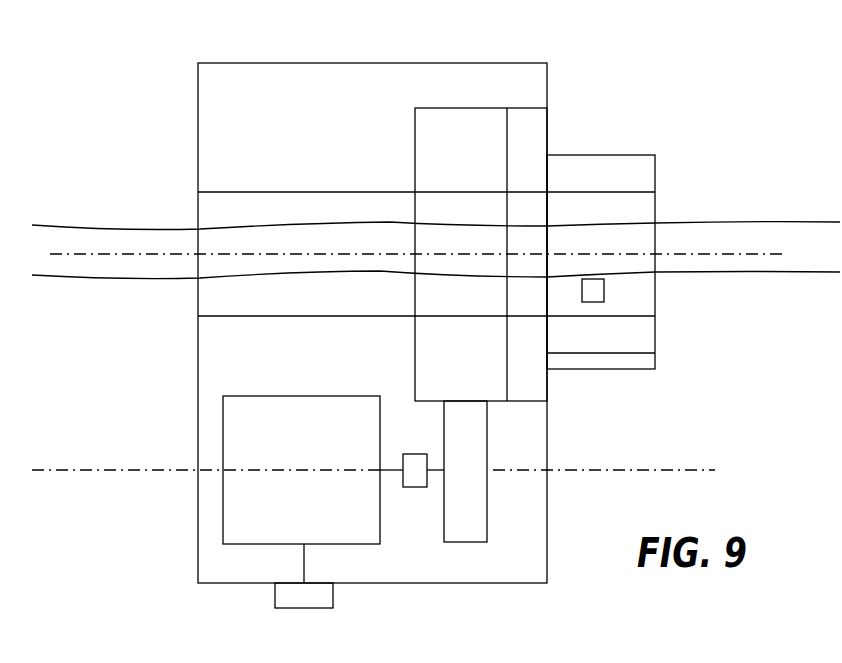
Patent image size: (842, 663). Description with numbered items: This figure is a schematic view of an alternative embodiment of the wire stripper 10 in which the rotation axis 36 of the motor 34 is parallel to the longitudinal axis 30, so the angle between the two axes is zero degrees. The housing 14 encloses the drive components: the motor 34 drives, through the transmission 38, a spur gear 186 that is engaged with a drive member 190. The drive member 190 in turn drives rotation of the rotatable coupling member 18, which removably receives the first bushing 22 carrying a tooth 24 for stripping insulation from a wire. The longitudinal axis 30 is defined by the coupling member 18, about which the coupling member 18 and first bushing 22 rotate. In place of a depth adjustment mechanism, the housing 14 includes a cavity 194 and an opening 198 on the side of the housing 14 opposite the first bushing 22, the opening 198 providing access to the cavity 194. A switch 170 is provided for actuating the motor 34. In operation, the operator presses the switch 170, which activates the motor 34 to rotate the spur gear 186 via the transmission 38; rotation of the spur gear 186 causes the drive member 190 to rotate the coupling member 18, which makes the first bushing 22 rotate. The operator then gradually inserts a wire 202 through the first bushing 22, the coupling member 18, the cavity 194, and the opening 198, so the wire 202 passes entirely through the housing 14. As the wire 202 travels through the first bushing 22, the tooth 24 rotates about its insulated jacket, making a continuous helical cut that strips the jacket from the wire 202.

The wire stripper 10 is at (142, 72).
The housing 14 is at (240, 78).
The coupling member 18 is at (527, 130).
The first bushing 22 is at (608, 170).
The tooth 24 is at (604, 290).
The longitudinal axis 30 is at (720, 252).
The motor 34 is at (246, 517).
The rotation axis 36 is at (636, 470).
The transmission 38 is at (406, 488).
The switch 170 is at (290, 604).
The spur gear 186 is at (478, 518).
The drive member 190 is at (462, 125).
The cavity 194 is at (305, 208).
The opening 198 is at (198, 298).
The wire 202 is at (120, 225).